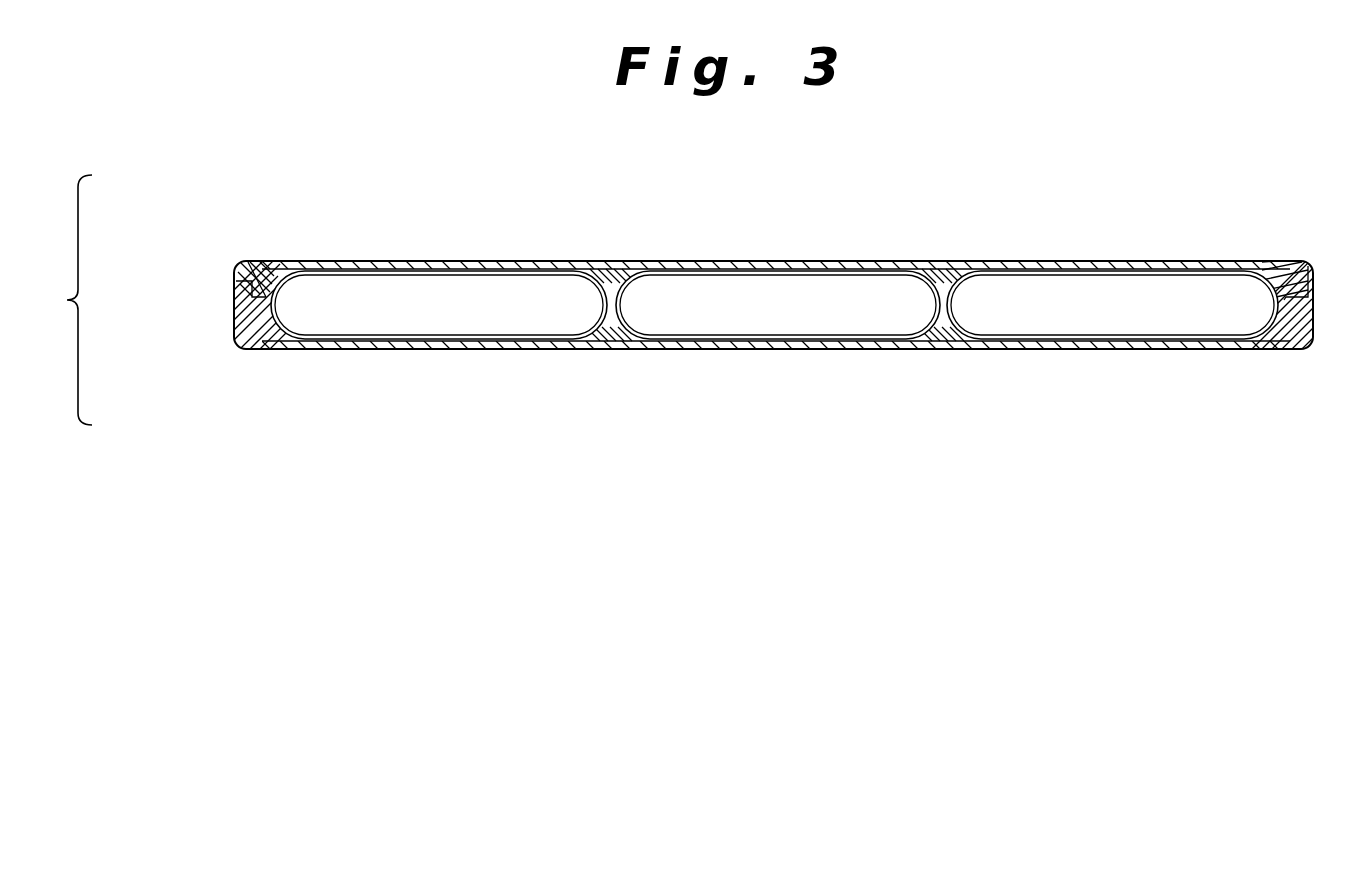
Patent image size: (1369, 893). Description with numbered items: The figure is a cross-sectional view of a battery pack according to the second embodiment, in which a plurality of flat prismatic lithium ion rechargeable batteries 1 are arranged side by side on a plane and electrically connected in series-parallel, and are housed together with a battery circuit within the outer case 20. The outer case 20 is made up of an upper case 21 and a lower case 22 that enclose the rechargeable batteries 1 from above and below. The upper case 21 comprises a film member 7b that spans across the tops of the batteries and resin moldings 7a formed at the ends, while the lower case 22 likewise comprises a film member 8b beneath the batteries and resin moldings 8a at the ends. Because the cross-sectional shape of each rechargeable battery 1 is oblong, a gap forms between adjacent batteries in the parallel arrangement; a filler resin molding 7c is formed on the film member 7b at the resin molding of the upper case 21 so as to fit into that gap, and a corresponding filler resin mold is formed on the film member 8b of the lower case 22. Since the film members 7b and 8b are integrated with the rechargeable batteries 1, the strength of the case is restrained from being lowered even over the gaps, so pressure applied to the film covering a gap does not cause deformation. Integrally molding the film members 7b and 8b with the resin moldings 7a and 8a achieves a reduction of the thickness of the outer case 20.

The rechargeable battery 1 is at (432, 315).
The resin molding 7a is at (250, 263).
The film member 7b is at (773, 262).
The filler resin molding 7c is at (612, 262).
The resin molding 8a is at (242, 322).
The film member 8b is at (662, 350).
The outer case 20 is at (58, 300).
The upper case 21 is at (262, 231).
The lower case 22 is at (266, 372).